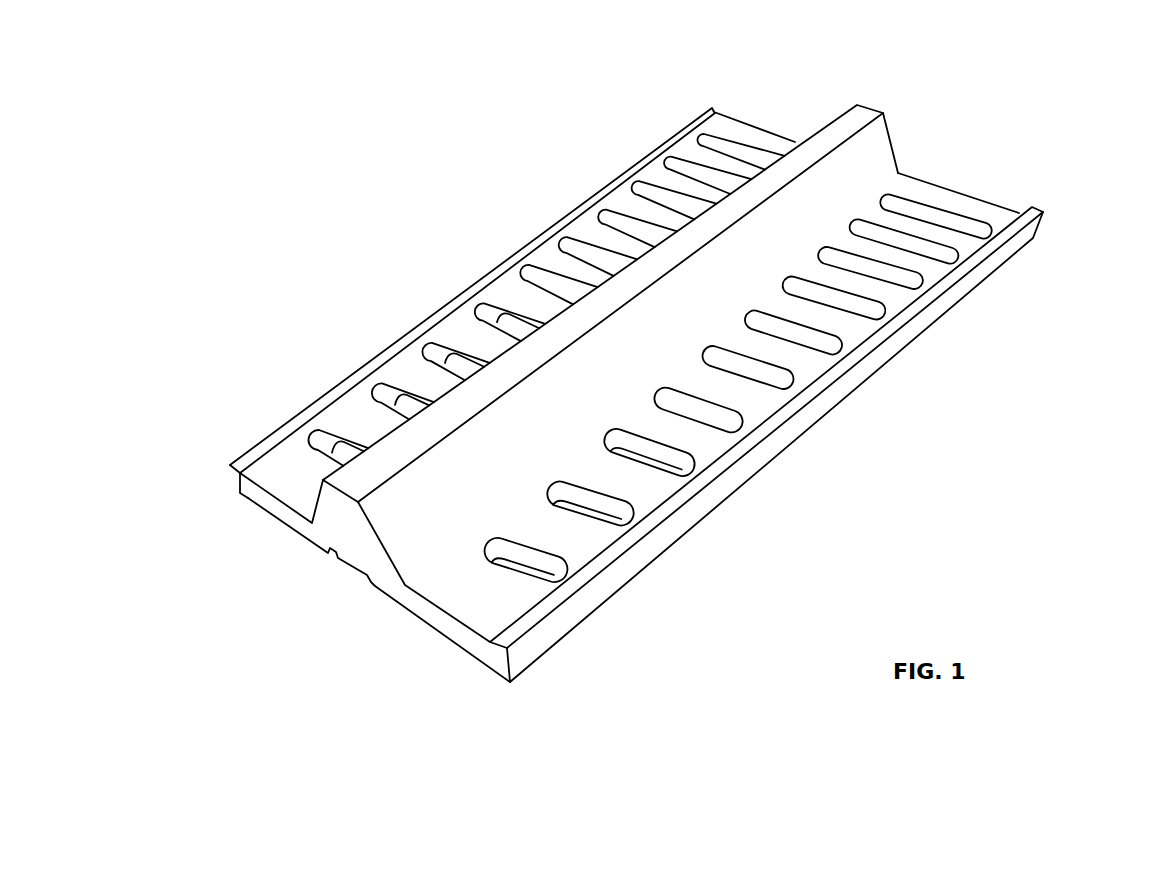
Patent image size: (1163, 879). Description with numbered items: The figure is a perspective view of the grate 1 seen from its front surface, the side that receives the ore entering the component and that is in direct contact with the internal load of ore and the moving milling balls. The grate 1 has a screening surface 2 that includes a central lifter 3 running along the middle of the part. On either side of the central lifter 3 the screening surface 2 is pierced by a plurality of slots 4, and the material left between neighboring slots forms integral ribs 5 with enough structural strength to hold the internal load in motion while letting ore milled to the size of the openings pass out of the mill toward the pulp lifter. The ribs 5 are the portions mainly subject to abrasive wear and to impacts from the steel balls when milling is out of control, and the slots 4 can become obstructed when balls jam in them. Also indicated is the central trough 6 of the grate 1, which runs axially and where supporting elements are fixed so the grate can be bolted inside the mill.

The grate 1 is at (370, 290).
The screening surface 2 is at (947, 195).
The central lifter 3 is at (860, 110).
The slots 4 is at (803, 335).
The ribs 5 is at (683, 435).
The central trough 6 is at (337, 577).